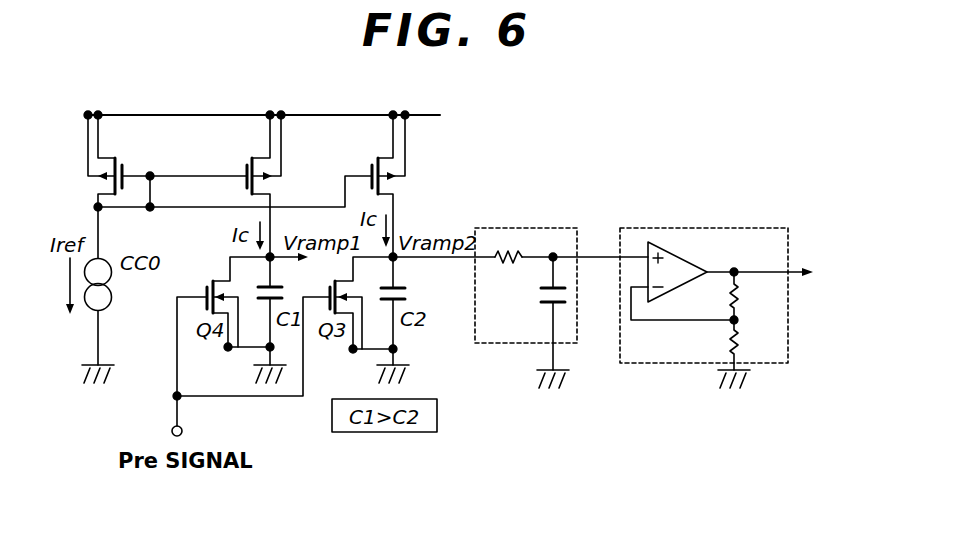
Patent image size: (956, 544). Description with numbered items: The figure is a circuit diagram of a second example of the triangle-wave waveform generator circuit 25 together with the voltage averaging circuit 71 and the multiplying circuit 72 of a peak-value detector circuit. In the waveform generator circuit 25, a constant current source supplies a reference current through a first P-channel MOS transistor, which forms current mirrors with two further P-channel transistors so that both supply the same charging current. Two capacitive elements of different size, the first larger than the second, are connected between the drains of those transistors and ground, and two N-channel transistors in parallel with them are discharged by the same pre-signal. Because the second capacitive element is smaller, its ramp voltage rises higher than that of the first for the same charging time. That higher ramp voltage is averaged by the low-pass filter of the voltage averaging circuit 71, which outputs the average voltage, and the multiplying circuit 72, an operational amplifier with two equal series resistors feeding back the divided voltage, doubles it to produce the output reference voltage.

The waveform generator circuit 25 is at (415, 93).
The voltage averaging circuit 71 is at (527, 228).
The multiplying circuit 72 is at (707, 228).